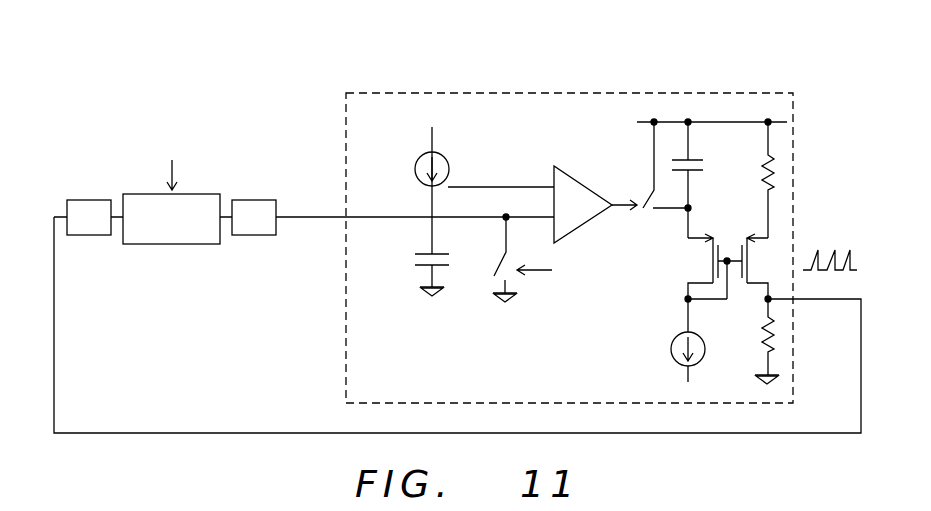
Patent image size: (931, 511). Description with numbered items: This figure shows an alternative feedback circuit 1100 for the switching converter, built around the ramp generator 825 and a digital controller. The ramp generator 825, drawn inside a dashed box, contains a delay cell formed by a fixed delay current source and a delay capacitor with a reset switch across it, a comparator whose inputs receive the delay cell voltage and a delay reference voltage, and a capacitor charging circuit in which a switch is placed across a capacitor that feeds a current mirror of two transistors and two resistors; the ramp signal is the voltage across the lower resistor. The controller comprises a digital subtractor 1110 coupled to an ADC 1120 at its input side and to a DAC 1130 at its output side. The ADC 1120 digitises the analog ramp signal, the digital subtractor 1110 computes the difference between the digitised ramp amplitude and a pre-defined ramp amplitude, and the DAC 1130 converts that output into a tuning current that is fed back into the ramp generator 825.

The feedback circuit 1100 is at (415, 40).
The ADC 1120 is at (80, 243).
The digital subtractor 1110 is at (158, 247).
The DAC 1130 is at (245, 243).
The ramp generator 825 is at (797, 170).